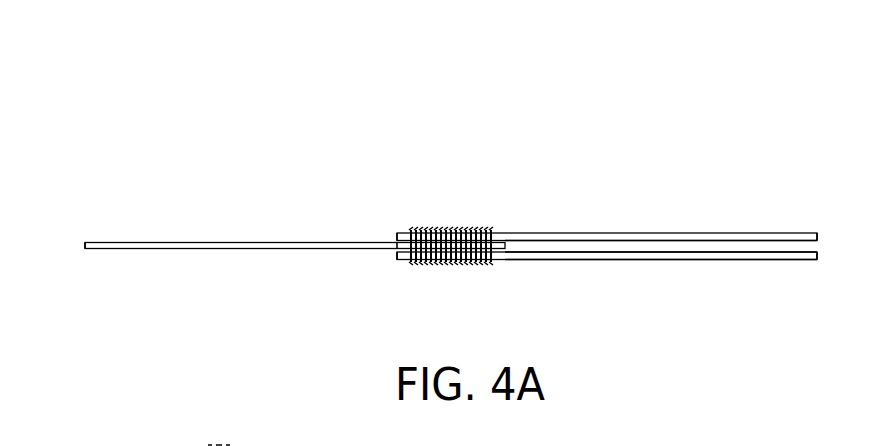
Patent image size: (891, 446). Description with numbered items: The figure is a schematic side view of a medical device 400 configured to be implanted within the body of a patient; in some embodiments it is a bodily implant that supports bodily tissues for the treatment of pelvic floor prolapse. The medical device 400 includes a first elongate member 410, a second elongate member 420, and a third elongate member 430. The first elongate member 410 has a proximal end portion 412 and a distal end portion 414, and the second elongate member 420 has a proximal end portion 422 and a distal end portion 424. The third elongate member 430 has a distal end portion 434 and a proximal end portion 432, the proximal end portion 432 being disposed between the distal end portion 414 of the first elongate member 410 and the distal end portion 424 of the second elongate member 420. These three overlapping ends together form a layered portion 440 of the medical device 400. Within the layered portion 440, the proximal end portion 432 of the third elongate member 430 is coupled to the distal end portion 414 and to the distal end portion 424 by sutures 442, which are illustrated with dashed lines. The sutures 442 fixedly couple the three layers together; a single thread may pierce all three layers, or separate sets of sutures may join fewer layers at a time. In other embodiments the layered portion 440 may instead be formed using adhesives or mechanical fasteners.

The medical device 400 is at (667, 93).
The first elongate member 410 is at (587, 235).
The proximal end portion of first elongate member 412 is at (805, 210).
The distal end portion of first elongate member 414 is at (518, 215).
The second elongate member 420 is at (720, 258).
The proximal end portion of second elongate member 422 is at (775, 287).
The distal end portion of second elongate member 424 is at (517, 273).
The third elongate member 430 is at (213, 247).
The proximal end portion of third elongate member 432 is at (382, 233).
The distal end portion of third elongate member 434 is at (110, 207).
The layered portion 440 is at (487, 185).
The sutures 442 is at (428, 227).